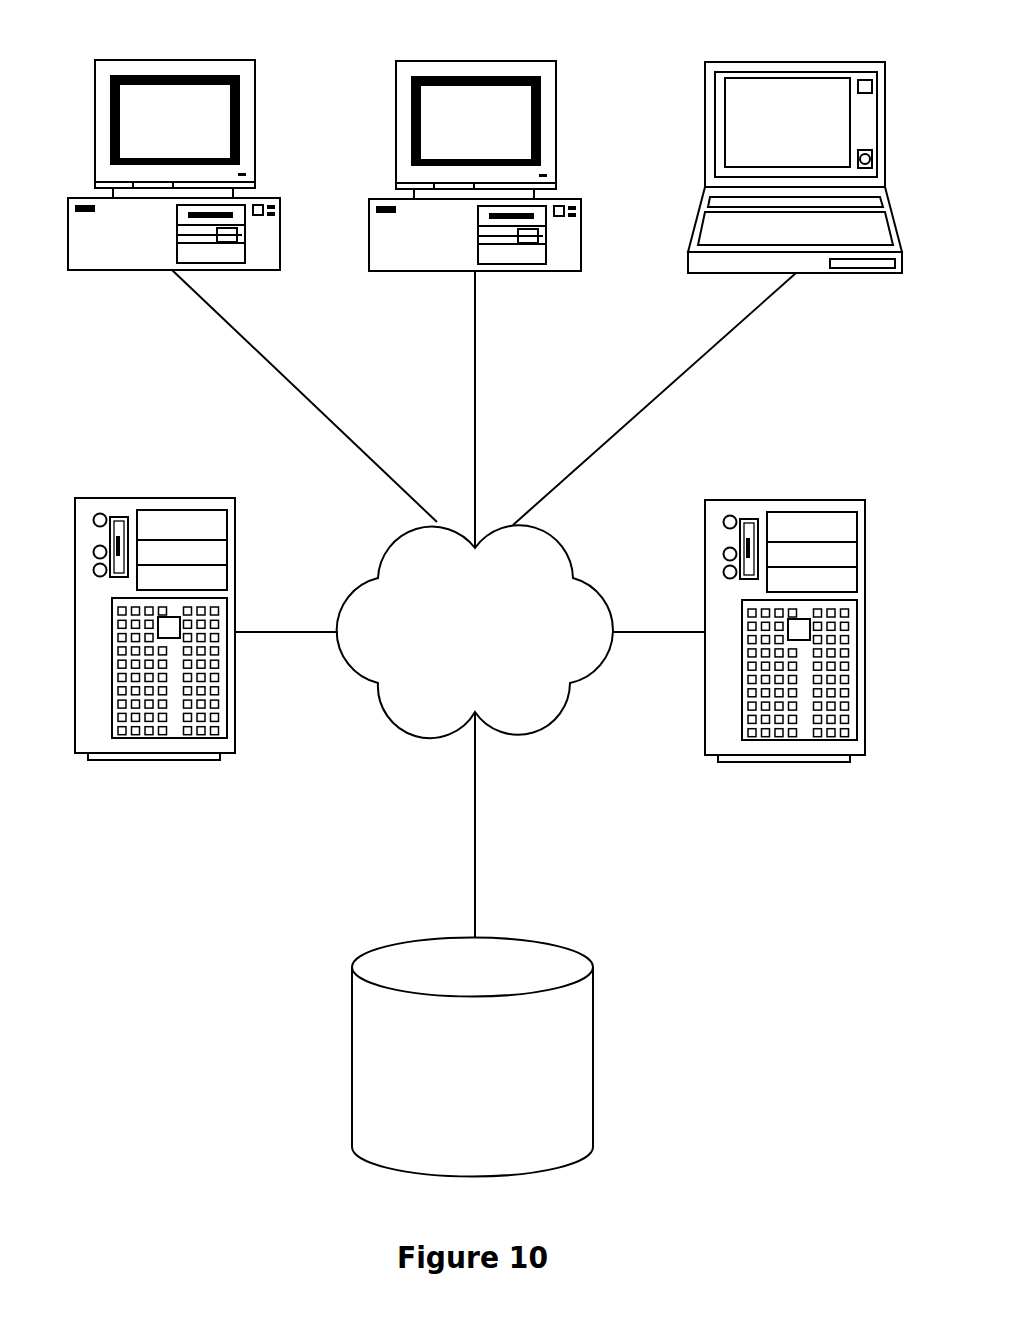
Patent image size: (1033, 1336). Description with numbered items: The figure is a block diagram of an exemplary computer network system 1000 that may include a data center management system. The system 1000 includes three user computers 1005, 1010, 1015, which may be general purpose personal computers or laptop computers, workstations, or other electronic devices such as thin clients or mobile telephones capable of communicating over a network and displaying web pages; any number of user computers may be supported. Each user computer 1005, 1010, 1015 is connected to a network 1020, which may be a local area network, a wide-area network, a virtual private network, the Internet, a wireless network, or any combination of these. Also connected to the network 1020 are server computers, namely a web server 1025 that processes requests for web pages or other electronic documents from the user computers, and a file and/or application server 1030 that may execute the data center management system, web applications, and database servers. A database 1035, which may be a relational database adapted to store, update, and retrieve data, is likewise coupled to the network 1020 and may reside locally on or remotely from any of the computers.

The system 1000 is at (258, 885).
The user computer 1005 is at (253, 270).
The user computer 1010 is at (556, 272).
The user computer 1015 is at (845, 273).
The network 1020 is at (558, 697).
The web server 1025 is at (217, 760).
The file and/or application server 1030 is at (843, 762).
The database 1035 is at (570, 1146).